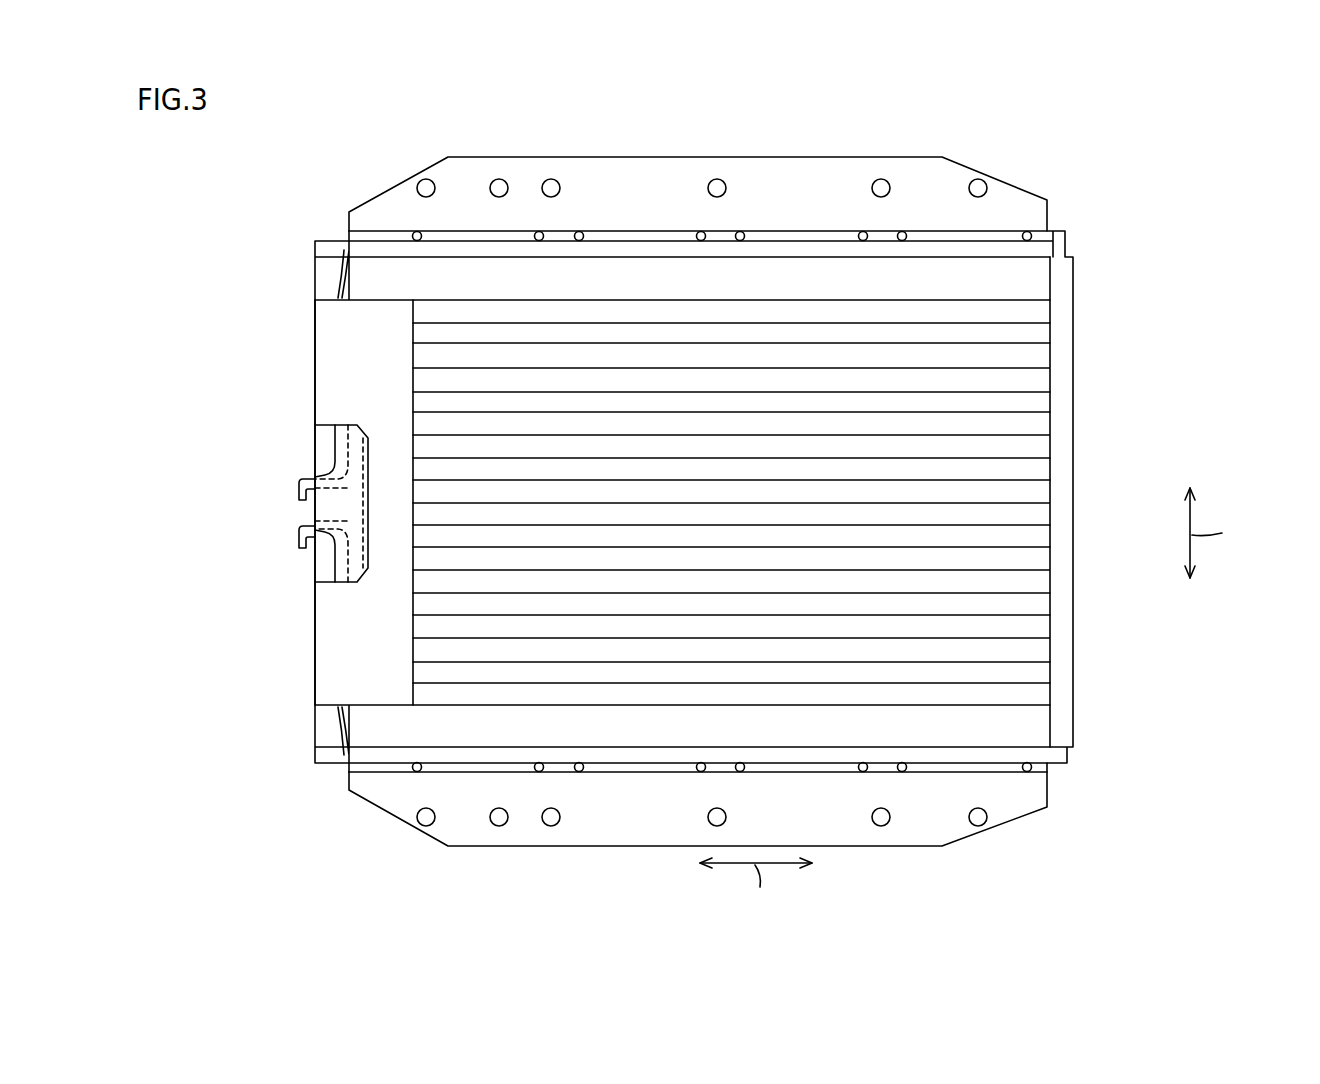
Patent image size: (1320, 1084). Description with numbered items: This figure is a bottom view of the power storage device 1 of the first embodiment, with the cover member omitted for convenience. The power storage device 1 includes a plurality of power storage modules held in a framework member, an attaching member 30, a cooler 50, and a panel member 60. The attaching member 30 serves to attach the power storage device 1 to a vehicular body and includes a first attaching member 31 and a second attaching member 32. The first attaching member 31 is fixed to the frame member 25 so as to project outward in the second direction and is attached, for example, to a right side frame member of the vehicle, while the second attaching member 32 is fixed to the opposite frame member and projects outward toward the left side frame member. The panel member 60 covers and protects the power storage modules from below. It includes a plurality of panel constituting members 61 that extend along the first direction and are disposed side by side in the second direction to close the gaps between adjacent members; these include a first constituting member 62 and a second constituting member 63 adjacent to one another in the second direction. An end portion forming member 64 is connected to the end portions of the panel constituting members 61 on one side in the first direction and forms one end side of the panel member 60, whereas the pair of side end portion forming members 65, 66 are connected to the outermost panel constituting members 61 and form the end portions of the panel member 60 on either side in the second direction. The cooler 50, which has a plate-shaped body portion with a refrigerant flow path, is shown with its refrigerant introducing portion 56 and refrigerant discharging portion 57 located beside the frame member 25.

The power storage device 1 is at (1105, 171).
The frame member 25 is at (315, 452).
The attaching member 30 is at (698, 503).
The first attaching member 31 is at (671, 847).
The second attaching member 32 is at (668, 157).
The cooler 50 is at (300, 516).
The refrigerant introducing portion 56 is at (298, 542).
The refrigerant discharging portion 57 is at (298, 497).
The panel member 60 is at (1095, 270).
The panel constituting members 61 is at (789, 502).
The first constituting member 62 is at (1033, 402).
The second constituting member 63 is at (1033, 334).
The end portion forming member 64 is at (330, 364).
The side end portion forming member 65 is at (472, 730).
The side end portion forming member 66 is at (475, 270).